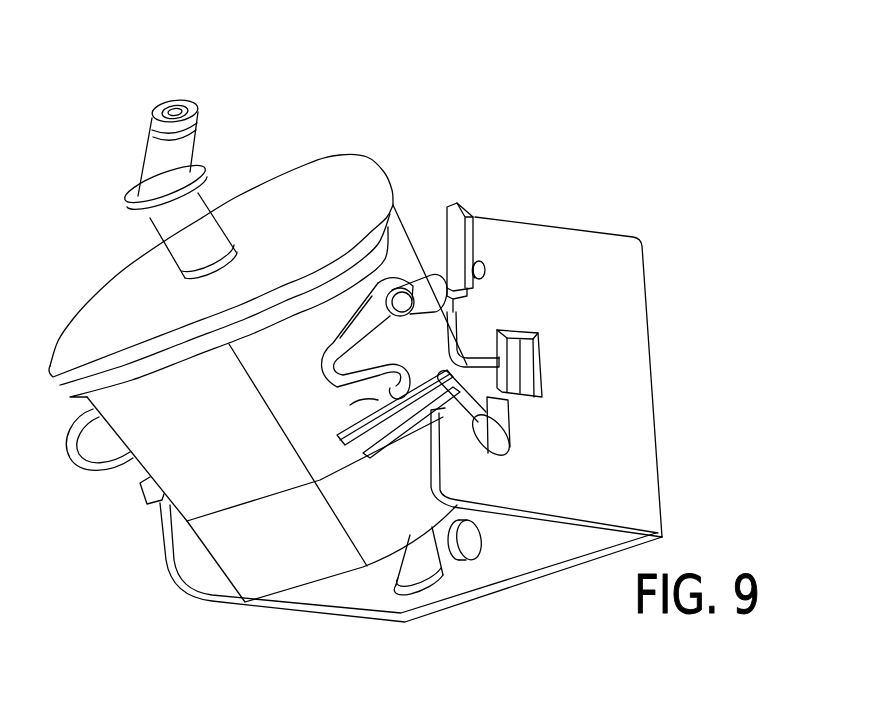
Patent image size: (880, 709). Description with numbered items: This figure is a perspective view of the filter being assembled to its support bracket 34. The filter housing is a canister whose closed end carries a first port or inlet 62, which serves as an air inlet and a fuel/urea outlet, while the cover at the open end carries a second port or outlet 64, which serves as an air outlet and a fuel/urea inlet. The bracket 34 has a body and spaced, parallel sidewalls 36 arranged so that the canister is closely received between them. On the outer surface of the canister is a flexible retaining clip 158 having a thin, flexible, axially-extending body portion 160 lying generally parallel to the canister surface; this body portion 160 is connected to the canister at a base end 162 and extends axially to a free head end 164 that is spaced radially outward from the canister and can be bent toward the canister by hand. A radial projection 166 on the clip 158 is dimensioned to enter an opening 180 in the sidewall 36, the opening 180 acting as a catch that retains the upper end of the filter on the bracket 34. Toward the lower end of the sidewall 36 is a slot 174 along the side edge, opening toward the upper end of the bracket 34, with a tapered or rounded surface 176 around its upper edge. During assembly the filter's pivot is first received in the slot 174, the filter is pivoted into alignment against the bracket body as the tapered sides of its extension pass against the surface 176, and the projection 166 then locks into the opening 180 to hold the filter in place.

The bracket 34 is at (441, 403).
The sidewall 36 is at (578, 246).
The first port or inlet 62 is at (430, 552).
The second port or outlet 64 is at (182, 109).
The flexible retaining clip 158 is at (377, 320).
The body portion 160 is at (320, 376).
The base end 162 is at (341, 431).
The free head end 164 is at (353, 332).
The radial projection 166 is at (444, 215).
The slot 174 is at (508, 458).
The tapered or rounded surface 176 is at (498, 336).
The opening 180 is at (484, 266).